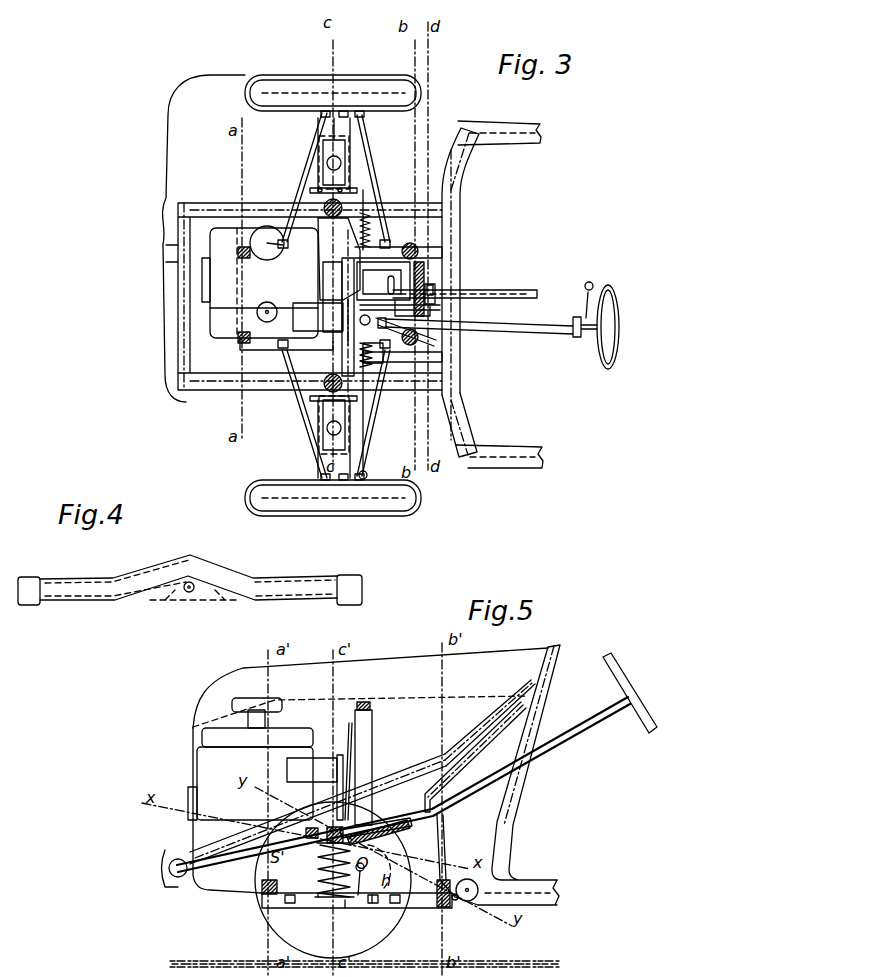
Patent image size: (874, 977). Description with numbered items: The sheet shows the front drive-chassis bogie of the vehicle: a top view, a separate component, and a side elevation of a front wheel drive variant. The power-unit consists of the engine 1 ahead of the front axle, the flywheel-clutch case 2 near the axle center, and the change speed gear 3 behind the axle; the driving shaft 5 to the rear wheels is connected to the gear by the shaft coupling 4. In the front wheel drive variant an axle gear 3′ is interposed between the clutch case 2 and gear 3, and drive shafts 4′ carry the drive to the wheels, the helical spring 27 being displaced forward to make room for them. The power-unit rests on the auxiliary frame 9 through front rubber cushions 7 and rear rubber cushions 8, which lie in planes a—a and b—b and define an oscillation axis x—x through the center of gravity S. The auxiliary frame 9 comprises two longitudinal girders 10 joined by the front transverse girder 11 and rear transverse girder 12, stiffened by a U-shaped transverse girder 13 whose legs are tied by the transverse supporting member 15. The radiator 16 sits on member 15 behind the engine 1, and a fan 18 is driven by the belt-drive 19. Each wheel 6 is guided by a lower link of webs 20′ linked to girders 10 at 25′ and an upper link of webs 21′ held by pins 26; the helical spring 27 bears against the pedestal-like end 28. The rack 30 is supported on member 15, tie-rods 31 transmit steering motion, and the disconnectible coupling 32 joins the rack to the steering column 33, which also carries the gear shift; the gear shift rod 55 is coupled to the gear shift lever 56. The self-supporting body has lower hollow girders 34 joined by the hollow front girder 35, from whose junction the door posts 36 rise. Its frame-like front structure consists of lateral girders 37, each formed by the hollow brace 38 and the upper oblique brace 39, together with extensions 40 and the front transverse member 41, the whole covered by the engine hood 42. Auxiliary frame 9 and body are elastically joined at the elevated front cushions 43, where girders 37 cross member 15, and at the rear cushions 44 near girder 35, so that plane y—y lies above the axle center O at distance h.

In FIG. 3, the engine 1 is at (222, 296).
In FIG. 5, the engine 1 is at (198, 765).
In FIG. 3, the flywheel-clutch case 2 is at (322, 276).
In FIG. 3, the change speed gear 3 is at (432, 282).
In FIG. 5, the change speed gear 3 is at (440, 912).
In FIG. 5, the axle gear 3′ is at (359, 900).
In FIG. 3, the shaft coupling 4 is at (441, 307).
In FIG. 5, the drive shafts 4′ is at (345, 909).
In FIG. 3, the driving shaft 5 is at (530, 292).
In FIG. 4, the driving shaft 5 is at (192, 594).
In FIG. 3, the wheels 6 is at (372, 82).
In FIG. 5, the wheels 6 is at (287, 929).
In FIG. 3, the front rubber cushions 7 is at (238, 252).
In FIG. 5, the front rubber cushions 7 is at (264, 890).
In FIG. 3, the rear rubber cushions 8 is at (440, 333).
In FIG. 5, the rear rubber cushions 8 is at (457, 899).
In FIG. 3, the auxiliary frame 9 is at (270, 337).
In FIG. 5, the auxiliary frame 9 is at (320, 908).
In FIG. 3, the longitudinal girders 10 is at (411, 249).
In FIG. 5, the longitudinal girders 10 is at (396, 908).
In FIG. 3, the front transverse girder 11 is at (242, 317).
In FIG. 3, the rear transverse girder 12 is at (404, 271).
In FIG. 3, the U-shaped transverse girder 13 is at (320, 343).
In FIG. 3, the transverse supporting member 15 is at (370, 208).
In FIG. 5, the transverse supporting member 15 is at (315, 851).
In FIG. 3, the radiator 16 is at (350, 270).
In FIG. 5, the radiator 16 is at (371, 739).
In FIG. 3, the fan 18 is at (343, 338).
In FIG. 5, the fan 18 is at (347, 750).
In FIG. 3, the belt-drive 19 is at (346, 292).
In FIG. 5, the belt-drive 19 is at (339, 768).
In FIG. 3, the web of lower guide link 20′ is at (300, 205).
In FIG. 3, the web of upper control link 21′ is at (312, 180).
In FIG. 3, the link point 25′ is at (318, 252).
In FIG. 5, the link point 25′ is at (316, 898).
In FIG. 3, the pins 26 is at (314, 190).
In FIG. 3, the helical spring 27 is at (320, 158).
In FIG. 5, the helical spring 27 is at (333, 900).
In FIG. 3, the pedestal-like end 28 is at (346, 150).
In FIG. 3, the rack 30 is at (372, 343).
In FIG. 5, the rack 30 is at (412, 806).
In FIG. 3, the tie-rods 31 is at (366, 447).
In FIG. 3, the disconnectible coupling 32 is at (436, 347).
In FIG. 5, the disconnectible coupling 32 is at (421, 824).
In FIG. 3, the steering column 33 is at (541, 333).
In FIG. 5, the steering column 33 is at (576, 731).
In FIG. 3, the lower hollow girders 34 is at (518, 143).
In FIG. 4, the lower hollow girders 34 is at (38, 606).
In FIG. 5, the lower hollow girders 34 is at (546, 901).
In FIG. 3, the hollow front girder 35 is at (476, 150).
In FIG. 4, the hollow front girder 35 is at (130, 582).
In FIG. 5, the hollow front girder 35 is at (479, 891).
In FIG. 5, the door posts 36 is at (516, 775).
In FIG. 3, the lateral girders 37 is at (438, 206).
In FIG. 5, the lateral girders 37 is at (419, 774).
In FIG. 5, the hollow brace 38 is at (441, 848).
In FIG. 5, the upper oblique brace 39 is at (487, 727).
In FIG. 3, the extensions 40 is at (241, 209).
In FIG. 5, the extensions 40 is at (233, 860).
In FIG. 3, the front transverse member 41 is at (178, 255).
In FIG. 5, the front transverse member 41 is at (180, 878).
In FIG. 5, the engine hood 42 is at (210, 689).
In FIG. 3, the front rubber cushions 43 is at (328, 214).
In FIG. 5, the front rubber cushions 43 is at (295, 822).
In FIG. 3, the rear rubber cushions 44 is at (440, 258).
In FIG. 5, the rear rubber cushions 44 is at (449, 909).
In FIG. 3, the gear shift rod 55 is at (582, 324).
In FIG. 3, the gear shift lever 56 is at (435, 287).